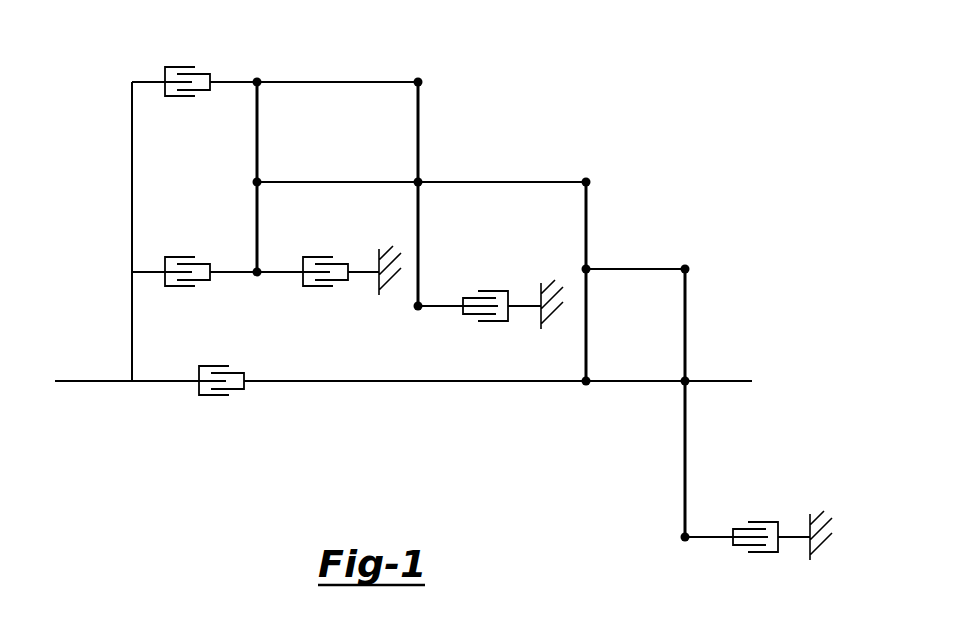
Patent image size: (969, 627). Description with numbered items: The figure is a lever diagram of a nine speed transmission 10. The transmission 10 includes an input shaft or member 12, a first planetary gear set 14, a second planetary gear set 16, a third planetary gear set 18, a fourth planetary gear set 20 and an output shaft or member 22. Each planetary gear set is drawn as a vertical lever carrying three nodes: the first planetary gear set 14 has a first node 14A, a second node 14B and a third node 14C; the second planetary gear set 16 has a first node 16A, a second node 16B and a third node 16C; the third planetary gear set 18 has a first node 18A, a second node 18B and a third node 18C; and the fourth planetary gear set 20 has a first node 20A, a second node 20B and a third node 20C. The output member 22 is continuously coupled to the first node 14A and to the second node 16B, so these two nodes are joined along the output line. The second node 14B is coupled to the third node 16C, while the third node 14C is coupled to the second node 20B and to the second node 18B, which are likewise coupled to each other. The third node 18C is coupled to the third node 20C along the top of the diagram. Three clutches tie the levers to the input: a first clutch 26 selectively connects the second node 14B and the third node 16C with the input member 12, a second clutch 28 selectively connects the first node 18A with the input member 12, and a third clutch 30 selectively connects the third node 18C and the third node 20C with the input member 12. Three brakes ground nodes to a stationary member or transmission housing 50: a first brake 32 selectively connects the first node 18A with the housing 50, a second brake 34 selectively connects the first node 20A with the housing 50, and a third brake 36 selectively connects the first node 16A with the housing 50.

The transmission 10 is at (610, 82).
The input shaft or member 12 is at (106, 381).
The first planetary gear set 14 is at (581, 408).
The first node of the first planetary gear set 14A is at (584, 384).
The second node of the first planetary gear set 14B is at (588, 268).
The third node of the first planetary gear set 14C is at (588, 182).
The second planetary gear set 16 is at (668, 552).
The first node of the second planetary gear set 16A is at (684, 537).
The second node of the second planetary gear set 16B is at (684, 383).
The third node of the second planetary gear set 16C is at (687, 268).
The third planetary gear set 18 is at (262, 292).
The first node of the third planetary gear set 18A is at (256, 270).
The second node of the third planetary gear set 18B is at (257, 182).
The third node of the third planetary gear set 18C is at (257, 80).
The fourth planetary gear set 20 is at (435, 147).
The first node of the fourth planetary gear set 20A is at (419, 308).
The second node of the fourth planetary gear set 20B is at (420, 184).
The third node of the fourth planetary gear set 20C is at (419, 80).
The output shaft or member 22 is at (730, 380).
The first clutch 26 is at (213, 396).
The second clutch 28 is at (181, 257).
The third clutch 30 is at (178, 67).
The first brake 32 is at (333, 257).
The second brake 34 is at (488, 291).
The third brake 36 is at (762, 522).
The stationary member or transmission housing 50 is at (379, 290).